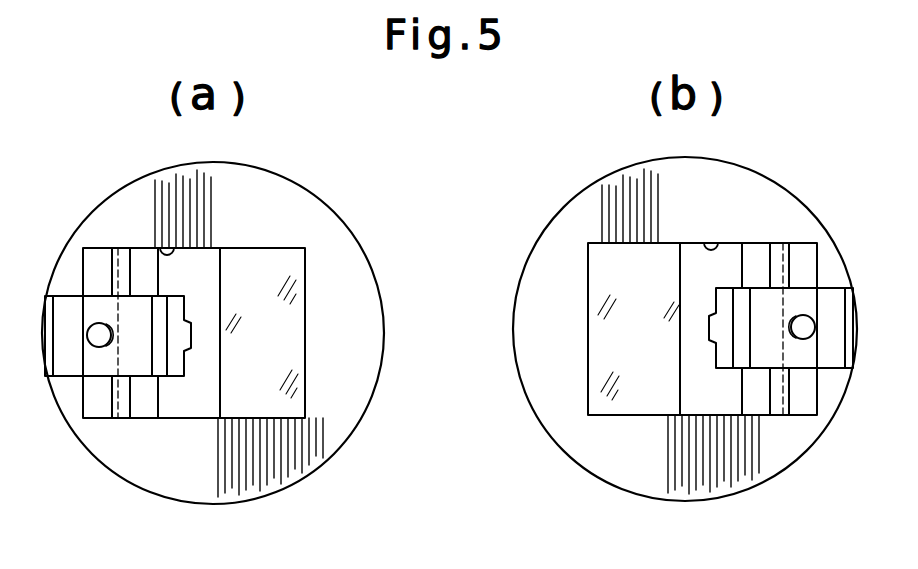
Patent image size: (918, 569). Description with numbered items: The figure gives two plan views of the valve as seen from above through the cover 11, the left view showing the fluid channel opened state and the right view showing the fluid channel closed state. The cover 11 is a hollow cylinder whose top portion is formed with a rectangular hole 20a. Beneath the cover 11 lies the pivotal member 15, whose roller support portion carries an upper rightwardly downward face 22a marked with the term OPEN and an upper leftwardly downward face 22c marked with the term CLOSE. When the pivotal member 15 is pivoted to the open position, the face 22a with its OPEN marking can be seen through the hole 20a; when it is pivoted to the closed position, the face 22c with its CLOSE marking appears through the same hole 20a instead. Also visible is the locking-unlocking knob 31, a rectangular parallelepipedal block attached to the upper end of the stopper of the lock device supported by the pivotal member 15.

The cover 11 is at (270, 192).
The pivotal member 15 is at (183, 410).
The rectangular hole 20a is at (166, 249).
The upper rightwardly downward face 22a is at (298, 288).
The upper leftwardly downward face 22c is at (602, 372).
The locking-unlocking knob 31 is at (72, 367).